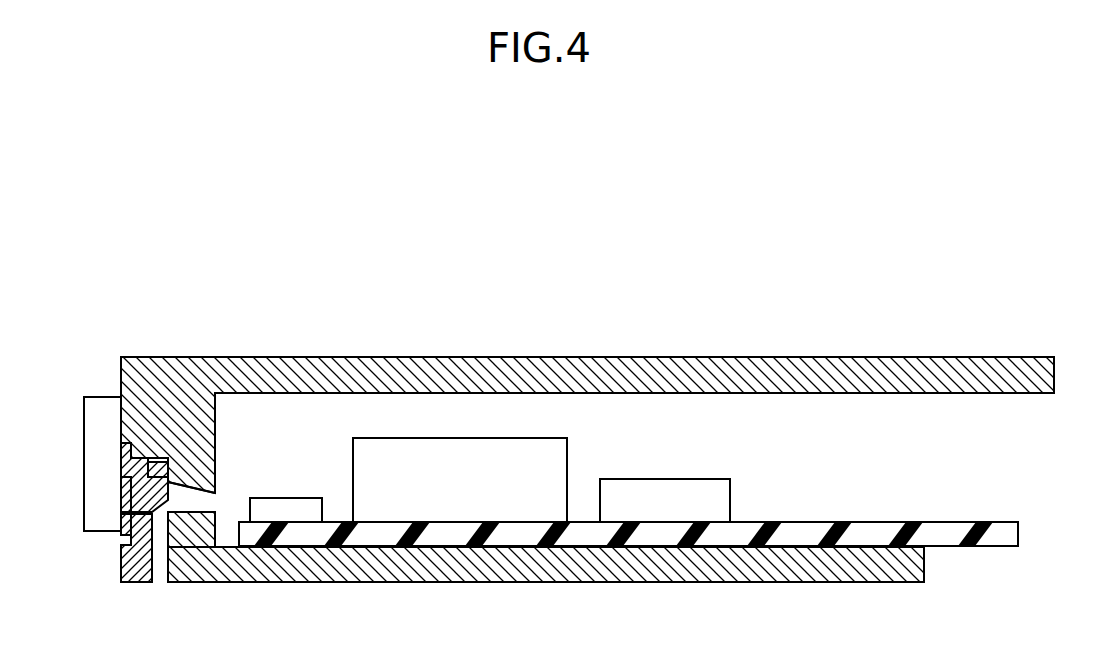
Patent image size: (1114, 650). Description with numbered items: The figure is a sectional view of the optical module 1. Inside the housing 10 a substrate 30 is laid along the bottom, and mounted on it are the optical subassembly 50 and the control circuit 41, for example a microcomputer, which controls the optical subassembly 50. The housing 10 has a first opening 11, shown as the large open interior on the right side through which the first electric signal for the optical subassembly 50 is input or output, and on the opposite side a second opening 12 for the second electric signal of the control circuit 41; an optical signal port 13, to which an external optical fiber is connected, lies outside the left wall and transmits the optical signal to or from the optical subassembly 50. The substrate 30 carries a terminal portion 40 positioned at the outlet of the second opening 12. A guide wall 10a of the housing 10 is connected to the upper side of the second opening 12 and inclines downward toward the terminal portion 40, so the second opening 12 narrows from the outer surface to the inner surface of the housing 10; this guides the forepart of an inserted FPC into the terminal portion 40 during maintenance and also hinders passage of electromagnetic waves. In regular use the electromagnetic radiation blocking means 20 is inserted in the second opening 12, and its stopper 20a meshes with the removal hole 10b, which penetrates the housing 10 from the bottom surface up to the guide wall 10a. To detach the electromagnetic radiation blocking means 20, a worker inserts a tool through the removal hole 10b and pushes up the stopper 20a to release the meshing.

The optical module 1 is at (773, 267).
The housing 10 is at (168, 368).
The guide wall 10a is at (190, 481).
The removal hole 10b is at (173, 557).
The first opening 11 is at (1002, 472).
The second opening 12 is at (122, 503).
The optical signal port 13 is at (102, 412).
The electromagnetic radiation blocking means 20 is at (122, 533).
The stopper 20a is at (163, 474).
The substrate 30 is at (1001, 534).
The terminal portion 40 is at (301, 506).
The control circuit 41 is at (670, 490).
The optical subassembly 50 is at (551, 468).